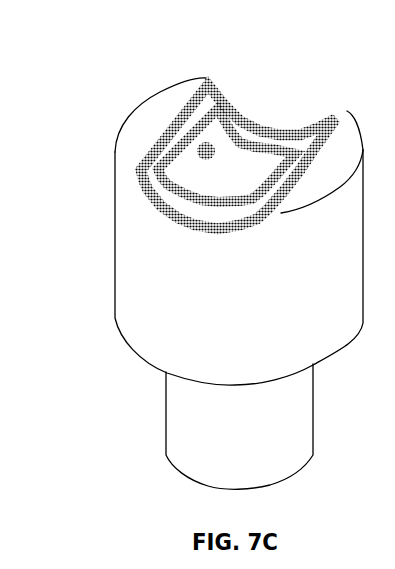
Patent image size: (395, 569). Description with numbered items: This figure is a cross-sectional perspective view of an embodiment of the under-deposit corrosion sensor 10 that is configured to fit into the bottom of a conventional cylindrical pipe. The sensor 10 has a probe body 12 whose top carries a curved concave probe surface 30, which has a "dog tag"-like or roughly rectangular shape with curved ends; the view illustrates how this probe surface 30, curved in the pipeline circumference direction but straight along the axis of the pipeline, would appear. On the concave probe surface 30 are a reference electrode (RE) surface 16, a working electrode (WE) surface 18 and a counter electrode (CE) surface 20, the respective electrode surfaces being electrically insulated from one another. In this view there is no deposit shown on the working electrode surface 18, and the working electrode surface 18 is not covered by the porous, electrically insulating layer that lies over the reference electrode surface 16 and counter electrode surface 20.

The under-deposit corrosion sensor 10 is at (93, 331).
The probe body 12 is at (241, 305).
The reference electrode (RE) surface 16 is at (206, 148).
The working electrode (WE) surface 18 is at (202, 167).
The counter electrode (CE) surface 20 is at (162, 194).
The curved concave probe surface 30 is at (287, 117).